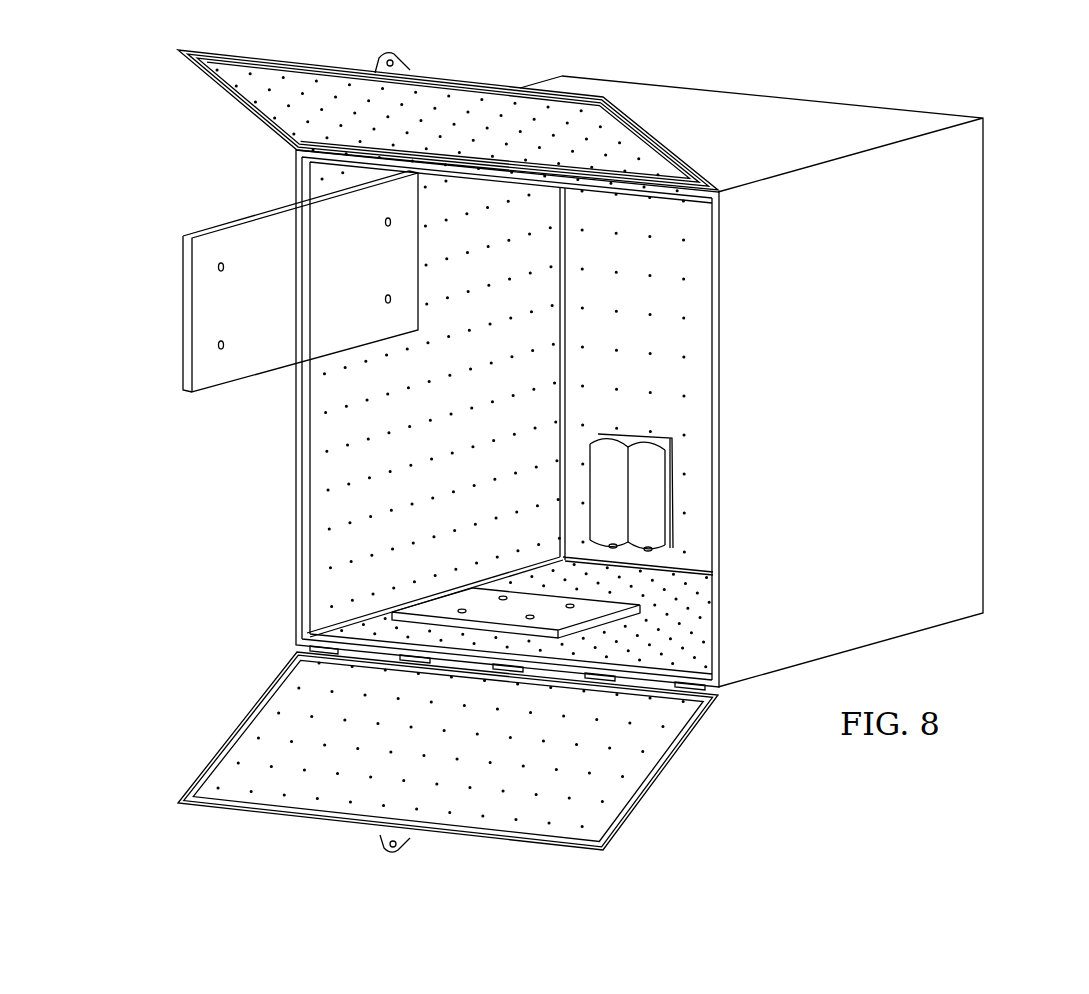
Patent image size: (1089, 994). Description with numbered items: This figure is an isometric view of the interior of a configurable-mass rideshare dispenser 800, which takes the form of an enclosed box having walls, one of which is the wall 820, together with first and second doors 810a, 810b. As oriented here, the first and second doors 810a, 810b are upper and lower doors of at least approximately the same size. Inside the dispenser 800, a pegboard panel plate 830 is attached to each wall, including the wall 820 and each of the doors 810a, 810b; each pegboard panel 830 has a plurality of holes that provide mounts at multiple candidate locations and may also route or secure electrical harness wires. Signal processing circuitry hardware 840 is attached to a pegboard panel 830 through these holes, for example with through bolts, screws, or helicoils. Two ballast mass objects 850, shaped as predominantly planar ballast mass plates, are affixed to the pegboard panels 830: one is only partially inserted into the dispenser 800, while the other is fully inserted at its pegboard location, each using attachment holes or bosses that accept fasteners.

The configurable-mass rideshare dispenser 800 is at (985, 372).
The first door 810a is at (665, 150).
The second door 810b is at (663, 768).
The wall 820 is at (300, 522).
The pegboard panel plate 830 is at (263, 108).
The signal processing circuitry hardware 840 is at (648, 482).
The ballast mass object 850 is at (326, 296).